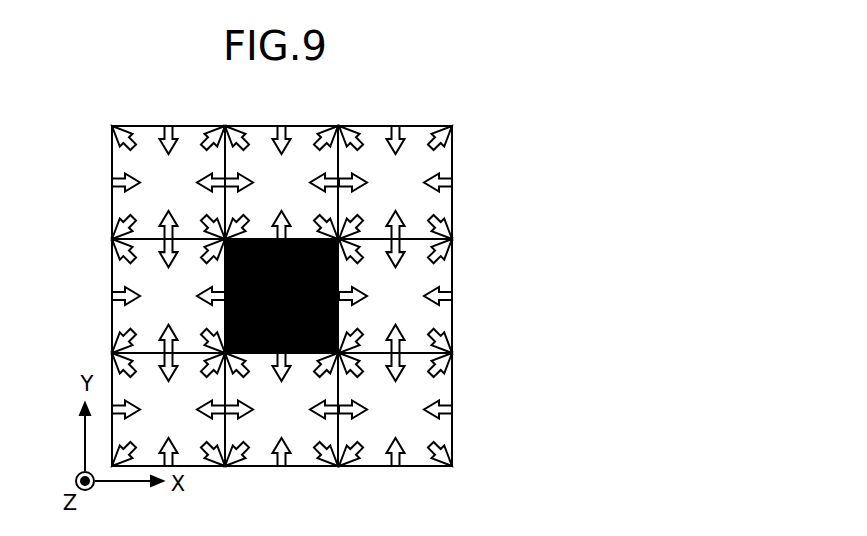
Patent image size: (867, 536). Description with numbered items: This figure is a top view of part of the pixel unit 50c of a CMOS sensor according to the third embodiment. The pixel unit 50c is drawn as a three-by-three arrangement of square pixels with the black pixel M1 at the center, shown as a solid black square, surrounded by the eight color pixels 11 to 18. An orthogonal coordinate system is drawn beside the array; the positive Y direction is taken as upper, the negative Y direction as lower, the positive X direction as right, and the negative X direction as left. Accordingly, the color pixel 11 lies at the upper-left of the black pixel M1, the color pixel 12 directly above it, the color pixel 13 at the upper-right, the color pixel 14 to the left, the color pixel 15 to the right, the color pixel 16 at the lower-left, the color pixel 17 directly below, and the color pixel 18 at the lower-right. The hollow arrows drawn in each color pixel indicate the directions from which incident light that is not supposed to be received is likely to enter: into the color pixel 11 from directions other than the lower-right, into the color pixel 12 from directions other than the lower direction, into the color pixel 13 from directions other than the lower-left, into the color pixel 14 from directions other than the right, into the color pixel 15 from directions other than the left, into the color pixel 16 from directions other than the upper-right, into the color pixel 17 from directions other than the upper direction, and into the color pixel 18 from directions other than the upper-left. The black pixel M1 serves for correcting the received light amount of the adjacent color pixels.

The color pixel 11 is at (150, 142).
The color pixel 12 is at (262, 142).
The color pixel 13 is at (376, 142).
The color pixel 14 is at (120, 273).
The color pixel 15 is at (442, 273).
The color pixel 16 is at (135, 380).
The color pixel 17 is at (263, 450).
The color pixel 18 is at (442, 387).
The black pixel M1 is at (297, 240).
The pixel unit 50c is at (470, 112).